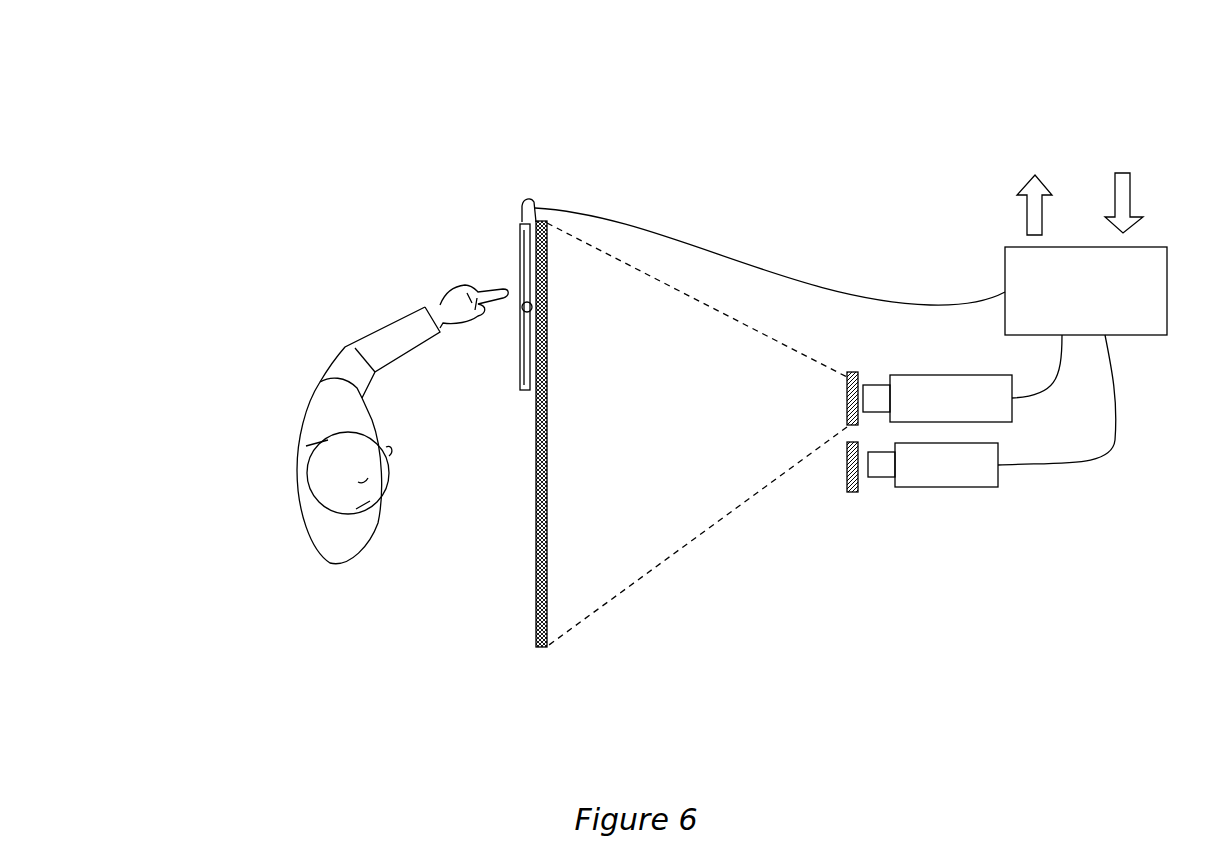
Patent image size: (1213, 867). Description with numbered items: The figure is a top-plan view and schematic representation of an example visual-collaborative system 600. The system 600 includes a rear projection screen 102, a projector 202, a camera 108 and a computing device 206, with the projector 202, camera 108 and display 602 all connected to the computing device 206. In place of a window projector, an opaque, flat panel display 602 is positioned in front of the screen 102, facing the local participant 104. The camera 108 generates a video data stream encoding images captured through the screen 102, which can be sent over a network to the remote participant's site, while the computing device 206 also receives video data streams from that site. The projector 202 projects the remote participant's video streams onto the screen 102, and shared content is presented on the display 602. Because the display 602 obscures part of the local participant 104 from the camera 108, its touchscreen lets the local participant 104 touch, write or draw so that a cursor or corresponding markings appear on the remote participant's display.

The visual-collaborative system 600 is at (1002, 57).
The rear projection screen 102 is at (539, 628).
The opaque, flat panel display 602 is at (521, 360).
The local participant 104 is at (375, 542).
The projector 202 is at (938, 383).
The camera 108 is at (957, 480).
The computing device 206 is at (1150, 325).